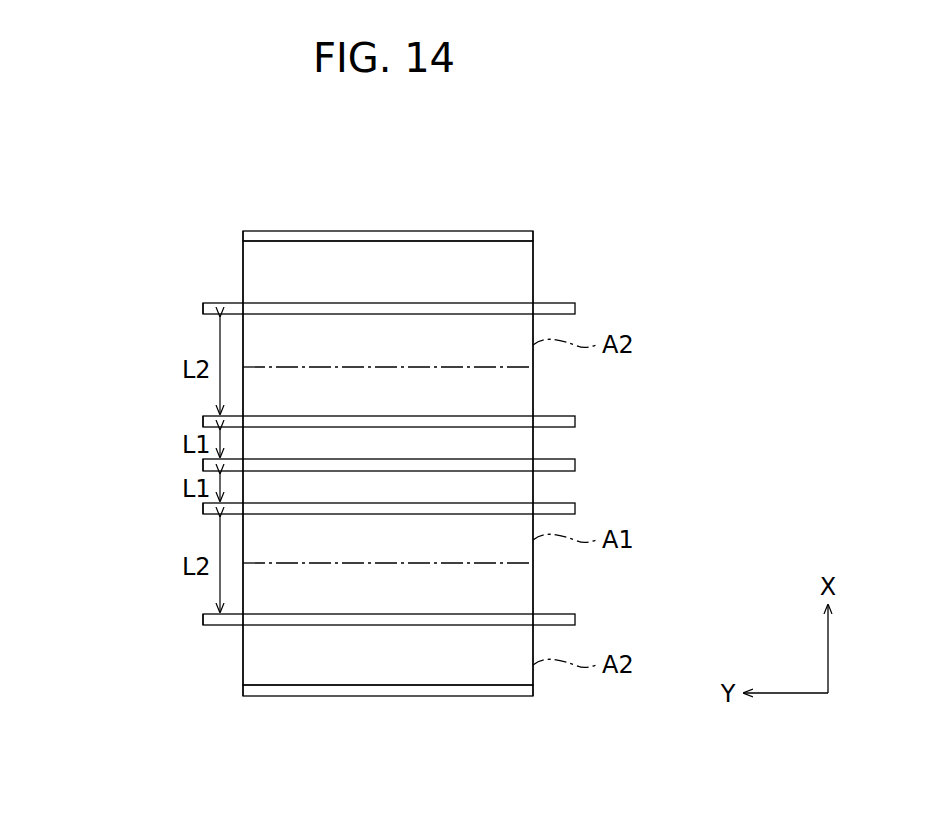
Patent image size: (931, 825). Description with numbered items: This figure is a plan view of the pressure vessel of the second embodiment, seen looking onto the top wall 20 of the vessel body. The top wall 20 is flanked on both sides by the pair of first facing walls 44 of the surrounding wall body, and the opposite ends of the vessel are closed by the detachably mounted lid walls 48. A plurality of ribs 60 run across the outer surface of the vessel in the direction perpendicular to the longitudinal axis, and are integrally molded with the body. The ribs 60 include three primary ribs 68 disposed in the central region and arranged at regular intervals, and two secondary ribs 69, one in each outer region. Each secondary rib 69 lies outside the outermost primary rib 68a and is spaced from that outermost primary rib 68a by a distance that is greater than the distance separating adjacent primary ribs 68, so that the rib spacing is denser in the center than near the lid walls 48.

The top wall 20 is at (328, 278).
The first facing walls 44 is at (243, 260).
The lid walls 48 is at (375, 231).
The ribs 60 is at (415, 464).
The primary ribs 68 is at (575, 421).
The outermost primary rib 68a is at (203, 420).
The secondary ribs 69 is at (575, 308).